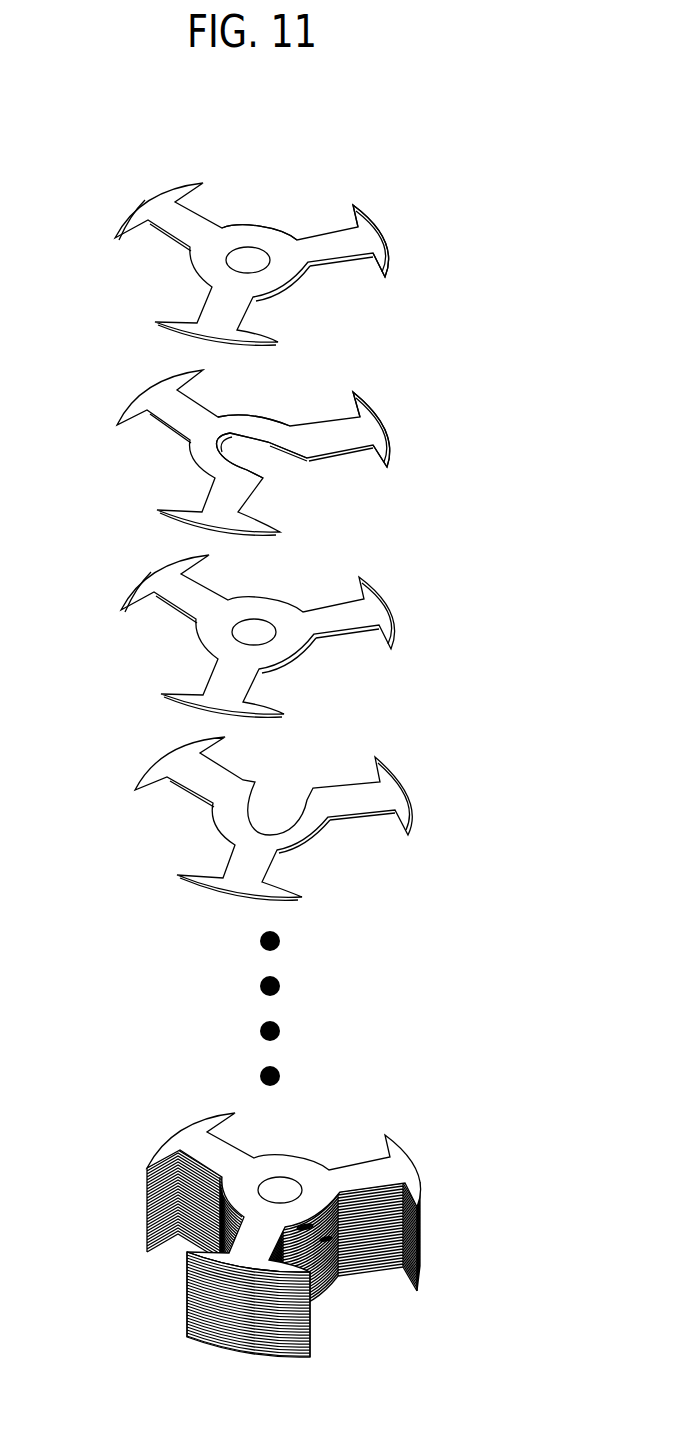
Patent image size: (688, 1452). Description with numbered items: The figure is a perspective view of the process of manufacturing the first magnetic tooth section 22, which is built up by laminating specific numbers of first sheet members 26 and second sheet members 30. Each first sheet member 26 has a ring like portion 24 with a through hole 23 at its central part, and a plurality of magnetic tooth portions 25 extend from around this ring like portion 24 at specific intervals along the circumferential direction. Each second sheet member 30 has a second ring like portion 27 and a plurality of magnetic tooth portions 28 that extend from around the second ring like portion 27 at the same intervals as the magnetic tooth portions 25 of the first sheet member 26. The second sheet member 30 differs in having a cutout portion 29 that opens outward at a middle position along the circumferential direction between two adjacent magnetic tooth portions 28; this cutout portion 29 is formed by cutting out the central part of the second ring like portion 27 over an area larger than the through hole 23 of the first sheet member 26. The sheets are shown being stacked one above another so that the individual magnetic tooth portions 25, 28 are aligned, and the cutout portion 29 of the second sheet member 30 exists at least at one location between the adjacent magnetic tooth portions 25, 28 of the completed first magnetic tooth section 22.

The first magnetic tooth section 22 is at (172, 1133).
The through hole 23 is at (263, 257).
The ring like portion 24 is at (250, 233).
The magnetic tooth portions 25 is at (378, 235).
The first sheet member 26 is at (140, 208).
The second ring like portion 27 is at (248, 422).
The magnetic tooth portions 28 is at (385, 432).
The cutout portion 29 is at (277, 450).
The second sheet member 30 is at (148, 390).